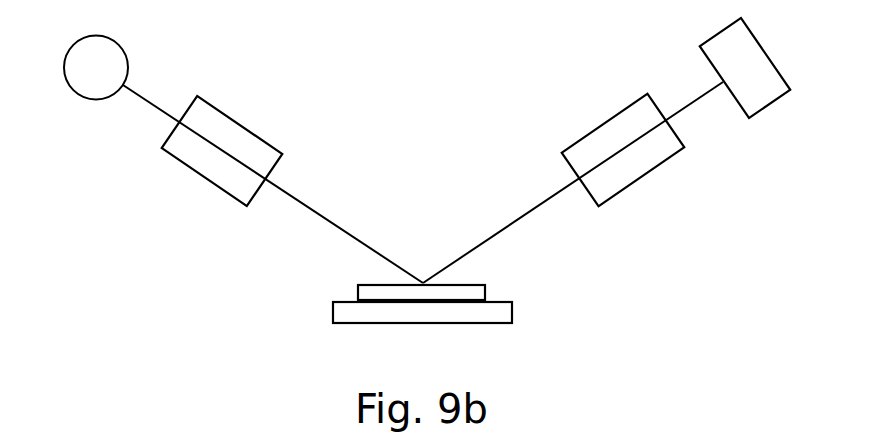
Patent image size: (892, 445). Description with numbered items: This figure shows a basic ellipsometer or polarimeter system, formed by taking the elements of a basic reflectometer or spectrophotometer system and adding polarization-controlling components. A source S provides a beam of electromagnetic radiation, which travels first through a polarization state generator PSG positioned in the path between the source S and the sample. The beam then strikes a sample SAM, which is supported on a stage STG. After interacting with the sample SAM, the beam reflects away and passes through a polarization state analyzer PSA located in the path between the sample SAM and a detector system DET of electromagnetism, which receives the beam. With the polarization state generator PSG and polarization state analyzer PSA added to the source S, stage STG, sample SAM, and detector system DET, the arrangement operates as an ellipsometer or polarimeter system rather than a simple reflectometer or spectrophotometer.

The source S is at (104, 78).
The polarization state generator PSG is at (190, 183).
The polarization state analyzer PSA is at (655, 183).
The detector system DET is at (745, 68).
The sample SAM is at (483, 278).
The stage STG is at (520, 312).